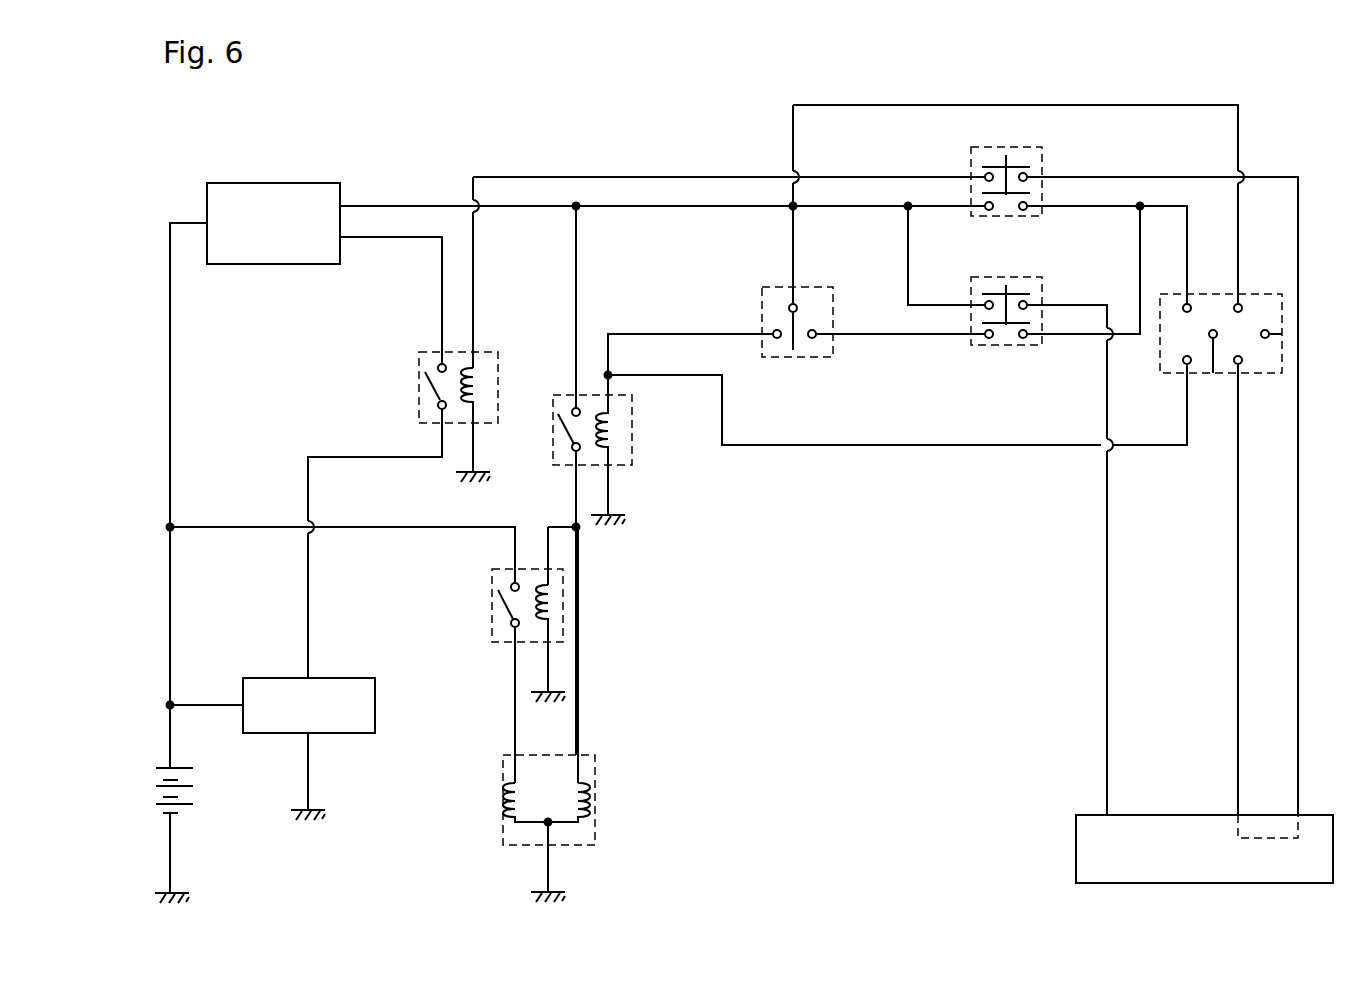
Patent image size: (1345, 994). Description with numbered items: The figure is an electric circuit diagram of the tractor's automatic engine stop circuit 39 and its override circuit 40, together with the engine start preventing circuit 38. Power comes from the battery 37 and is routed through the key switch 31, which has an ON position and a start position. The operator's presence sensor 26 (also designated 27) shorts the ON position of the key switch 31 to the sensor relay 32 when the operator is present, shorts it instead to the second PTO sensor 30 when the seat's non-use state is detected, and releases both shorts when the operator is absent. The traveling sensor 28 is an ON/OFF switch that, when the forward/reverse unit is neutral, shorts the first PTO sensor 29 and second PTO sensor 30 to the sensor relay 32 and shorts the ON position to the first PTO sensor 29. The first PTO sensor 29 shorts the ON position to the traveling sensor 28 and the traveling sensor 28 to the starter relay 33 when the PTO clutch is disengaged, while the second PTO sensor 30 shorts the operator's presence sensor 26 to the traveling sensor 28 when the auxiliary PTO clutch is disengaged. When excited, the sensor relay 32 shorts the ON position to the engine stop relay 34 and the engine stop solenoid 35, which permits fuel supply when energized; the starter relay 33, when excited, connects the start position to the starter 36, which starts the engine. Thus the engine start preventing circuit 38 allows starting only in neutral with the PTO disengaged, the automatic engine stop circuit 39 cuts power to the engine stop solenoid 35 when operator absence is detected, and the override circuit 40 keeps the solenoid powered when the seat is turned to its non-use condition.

The operator's presence sensor 26 is at (802, 349).
The operator presence sensor (alternative) 27 is at (833, 357).
The traveling sensor 28 is at (1270, 376).
The first PTO sensor 29 is at (971, 163).
The second PTO sensor 30 is at (1042, 292).
The key switch 31 is at (282, 181).
The sensor relay 32 is at (632, 428).
The starter relay 33 is at (498, 364).
The engine stop relay 34 is at (492, 613).
The engine stop solenoid 35 is at (596, 802).
The starter 36 is at (347, 677).
The battery 37 is at (186, 806).
The engine start preventing circuit 38 is at (507, 156).
The automatic engine stop circuit 39 is at (677, 513).
The override circuit 40 is at (930, 473).